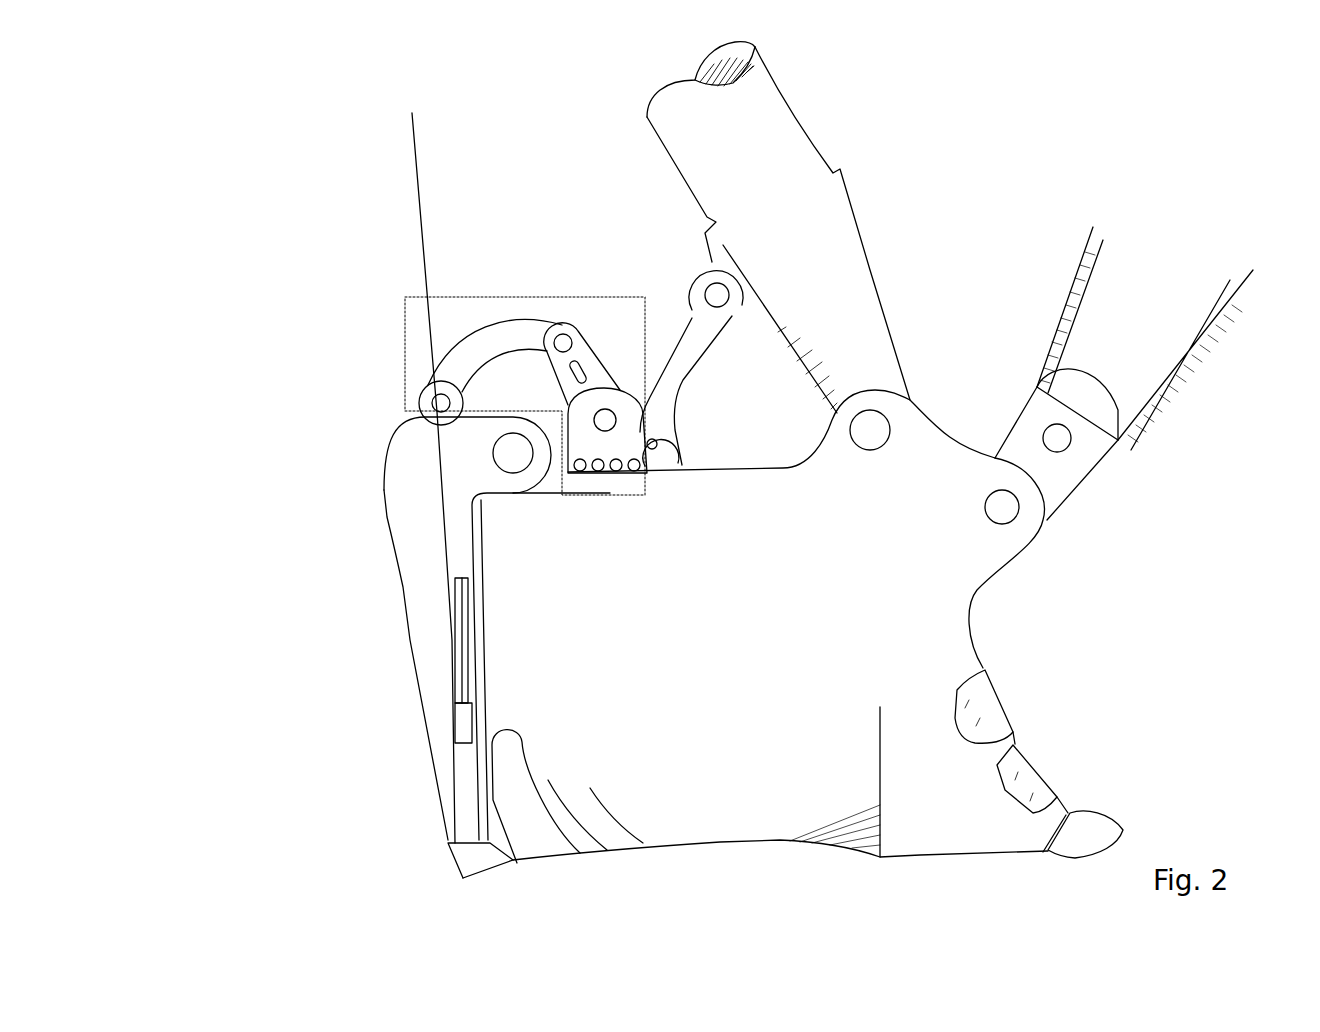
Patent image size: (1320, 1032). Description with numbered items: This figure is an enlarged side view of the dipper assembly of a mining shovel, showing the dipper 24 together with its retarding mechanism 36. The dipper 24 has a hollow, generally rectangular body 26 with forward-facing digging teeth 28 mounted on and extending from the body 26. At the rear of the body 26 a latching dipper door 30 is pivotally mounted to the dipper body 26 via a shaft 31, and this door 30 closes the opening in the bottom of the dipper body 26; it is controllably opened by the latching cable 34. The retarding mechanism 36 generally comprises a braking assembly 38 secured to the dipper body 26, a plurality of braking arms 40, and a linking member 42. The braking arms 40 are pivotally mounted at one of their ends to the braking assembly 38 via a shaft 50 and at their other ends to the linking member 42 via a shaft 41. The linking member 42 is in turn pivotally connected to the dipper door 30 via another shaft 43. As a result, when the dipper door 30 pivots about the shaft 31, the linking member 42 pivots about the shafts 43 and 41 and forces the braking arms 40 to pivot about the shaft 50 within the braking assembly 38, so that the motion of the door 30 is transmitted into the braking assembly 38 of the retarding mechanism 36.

The dipper 24 is at (382, 708).
The dipper body 26 is at (961, 641).
The digging teeth 28 is at (1098, 830).
The dipper door 30 is at (412, 599).
The shaft 31 is at (526, 472).
The latching cable 34 is at (403, 176).
The retarding mechanism 36 is at (394, 329).
The braking assembly 38 is at (603, 440).
The braking arms 40 is at (604, 332).
The shaft 41 is at (570, 321).
The linking member 42 is at (477, 319).
The shaft 43 is at (420, 400).
The shaft 50 is at (624, 439).